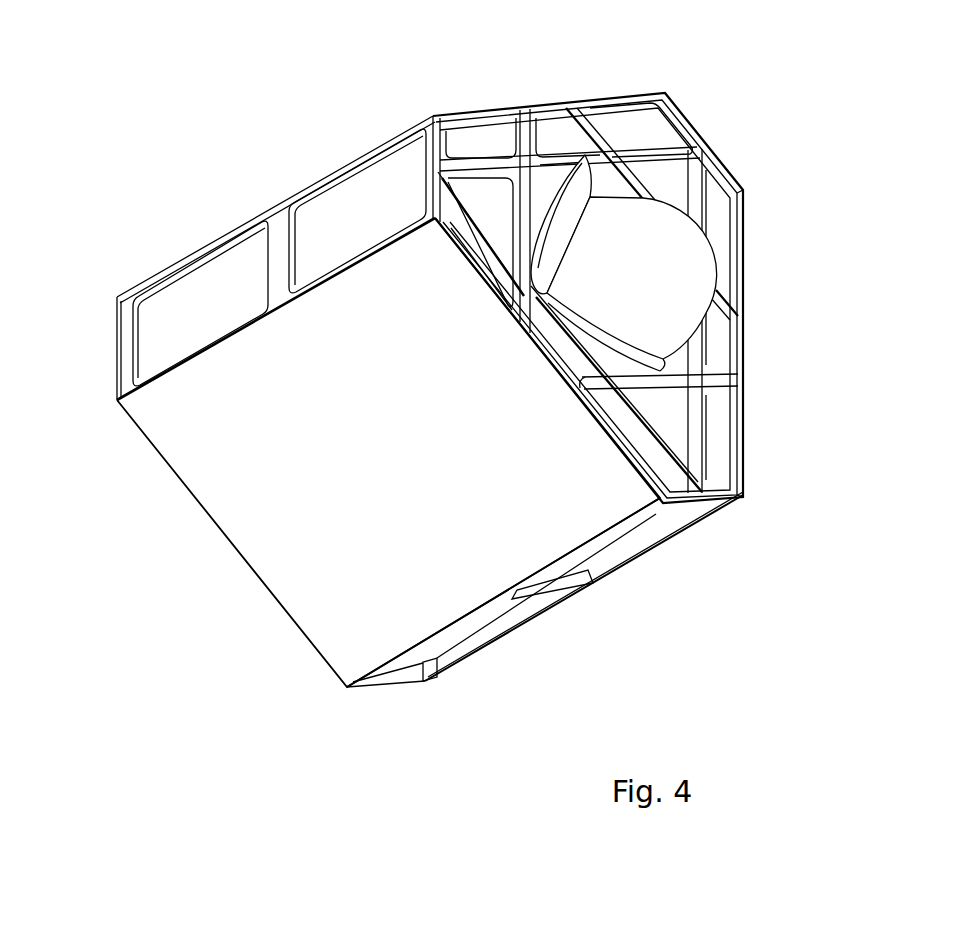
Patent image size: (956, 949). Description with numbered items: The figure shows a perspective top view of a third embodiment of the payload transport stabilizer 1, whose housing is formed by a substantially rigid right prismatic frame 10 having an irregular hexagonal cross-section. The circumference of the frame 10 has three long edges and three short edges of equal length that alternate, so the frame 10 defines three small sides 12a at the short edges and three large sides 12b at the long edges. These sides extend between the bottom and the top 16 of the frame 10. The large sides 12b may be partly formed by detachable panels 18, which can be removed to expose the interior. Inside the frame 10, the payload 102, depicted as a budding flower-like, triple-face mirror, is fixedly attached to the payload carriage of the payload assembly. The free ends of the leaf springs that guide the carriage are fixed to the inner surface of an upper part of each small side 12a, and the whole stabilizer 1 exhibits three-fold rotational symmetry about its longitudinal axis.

The payload transport stabilizer 1 is at (180, 188).
The frame 10 is at (666, 93).
The small side 12a is at (352, 208).
The large side 12b is at (224, 425).
The top 16 is at (700, 384).
The detachable panel 18 is at (392, 605).
The payload 102 is at (660, 266).